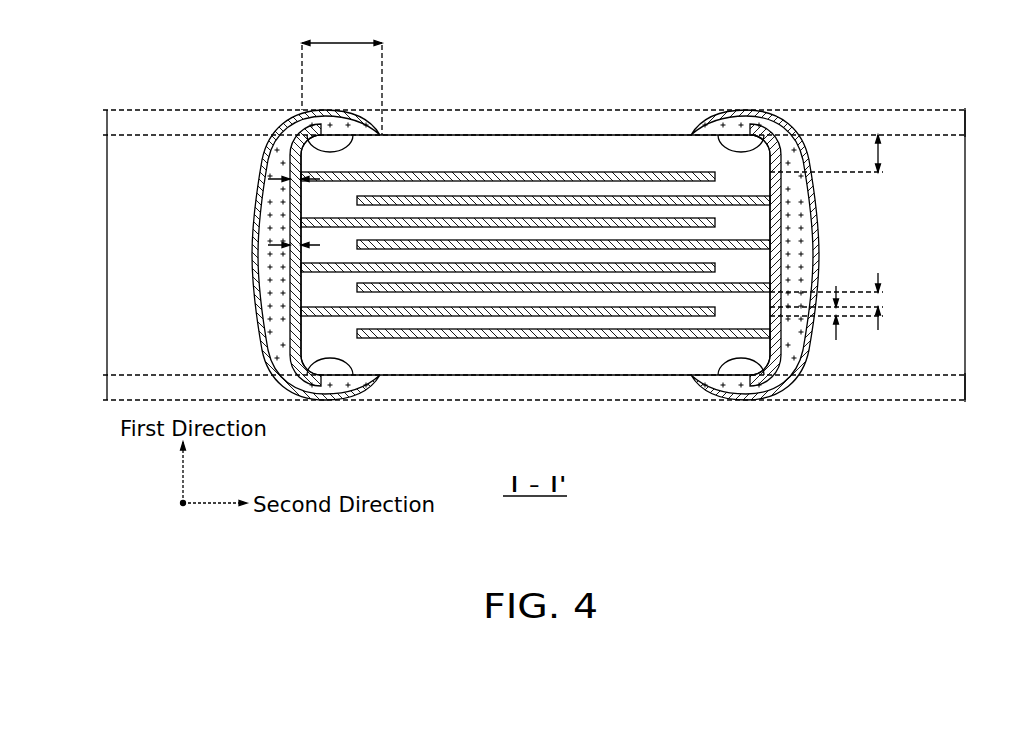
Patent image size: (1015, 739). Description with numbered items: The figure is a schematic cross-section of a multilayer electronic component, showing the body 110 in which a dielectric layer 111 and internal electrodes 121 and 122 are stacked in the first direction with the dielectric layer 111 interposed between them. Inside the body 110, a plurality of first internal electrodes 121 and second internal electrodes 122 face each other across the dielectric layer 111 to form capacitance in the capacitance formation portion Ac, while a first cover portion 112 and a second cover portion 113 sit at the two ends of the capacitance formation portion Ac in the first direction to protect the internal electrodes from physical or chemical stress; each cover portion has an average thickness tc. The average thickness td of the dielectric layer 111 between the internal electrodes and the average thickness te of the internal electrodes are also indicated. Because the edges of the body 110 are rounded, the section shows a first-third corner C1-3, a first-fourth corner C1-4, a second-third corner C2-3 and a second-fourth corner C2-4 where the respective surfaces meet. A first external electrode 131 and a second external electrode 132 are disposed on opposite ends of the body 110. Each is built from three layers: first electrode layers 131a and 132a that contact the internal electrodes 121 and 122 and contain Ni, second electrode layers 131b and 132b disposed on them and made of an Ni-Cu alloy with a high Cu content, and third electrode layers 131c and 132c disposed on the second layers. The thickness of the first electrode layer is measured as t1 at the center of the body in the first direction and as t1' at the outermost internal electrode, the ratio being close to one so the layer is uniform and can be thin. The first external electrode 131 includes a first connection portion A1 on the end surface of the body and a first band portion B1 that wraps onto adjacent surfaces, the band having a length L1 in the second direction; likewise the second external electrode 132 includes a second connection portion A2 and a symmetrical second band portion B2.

The body 110 is at (468, 135).
The dielectric layer 111 is at (405, 212).
The first cover portion 112 is at (532, 140).
The second cover portion 113 is at (550, 358).
The first internal electrode 121 is at (580, 175).
The second internal electrode 122 is at (645, 198).
The first external electrode 131 is at (251, 255).
The first electrode layer 131a is at (295, 228).
The second electrode layer 131b is at (277, 265).
The third electrode layer 131c is at (168, 218).
The second external electrode 132 is at (820, 255).
The first electrode layer 132a is at (785, 184).
The second electrode layer 132b is at (798, 222).
The third electrode layer 132c is at (818, 250).
The capacitance formation portion Ac is at (635, 342).
The first-third corner C1-3 is at (355, 378).
The first-fourth corner C1-4 is at (716, 378).
The second-third corner C2-3 is at (353, 110).
The second-fourth corner C2-4 is at (713, 118).
The length of the first band portion L1 is at (342, 77).
The thickness of the first electrode layer t1 is at (304, 217).
The thickness of the first electrode layer at outermost internal electrode t1' is at (272, 165).
The average thickness of the cover portion tc is at (838, 153).
The average thickness of the dielectric layer td is at (838, 301).
The average thickness of the internal electrode te is at (826, 313).
The first connection portion A1 is at (92, 255).
The second connection portion A2 is at (980, 255).
The first band portion B1 is at (518, 256).
The second band portion B2 is at (979, 255).